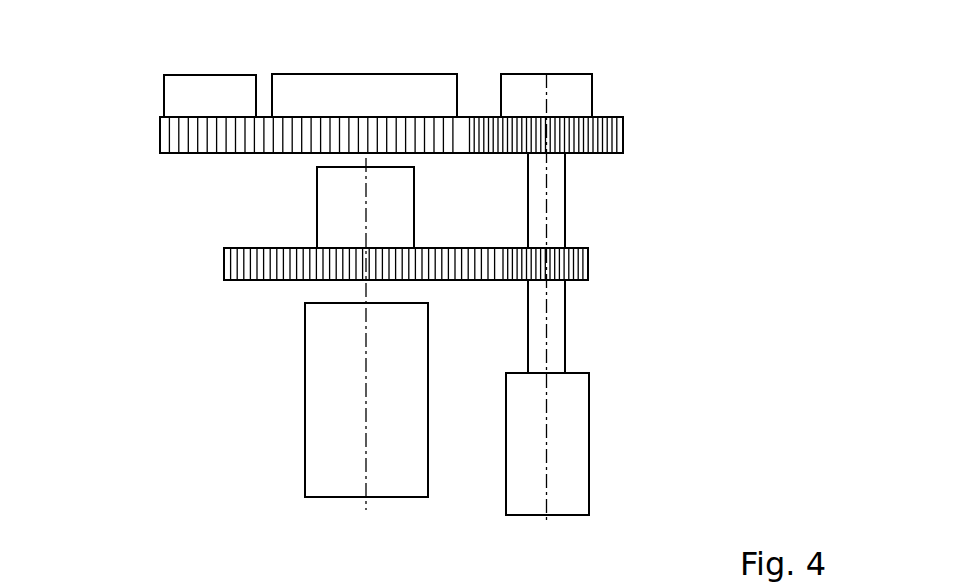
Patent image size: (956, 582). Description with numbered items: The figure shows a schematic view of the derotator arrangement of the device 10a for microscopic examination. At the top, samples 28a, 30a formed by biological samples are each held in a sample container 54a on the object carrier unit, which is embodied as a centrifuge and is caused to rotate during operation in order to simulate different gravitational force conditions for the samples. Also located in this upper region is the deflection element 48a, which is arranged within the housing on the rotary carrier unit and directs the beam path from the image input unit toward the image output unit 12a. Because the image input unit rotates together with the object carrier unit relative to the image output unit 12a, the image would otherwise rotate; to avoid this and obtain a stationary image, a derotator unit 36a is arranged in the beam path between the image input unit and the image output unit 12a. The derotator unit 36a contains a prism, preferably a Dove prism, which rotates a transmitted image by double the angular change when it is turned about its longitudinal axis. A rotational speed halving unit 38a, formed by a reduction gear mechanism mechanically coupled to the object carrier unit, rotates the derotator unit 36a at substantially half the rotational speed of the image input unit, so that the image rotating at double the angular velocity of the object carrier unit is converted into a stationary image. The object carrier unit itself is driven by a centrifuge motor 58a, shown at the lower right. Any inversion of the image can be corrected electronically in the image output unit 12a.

The device for microscopic examination 10a is at (133, 238).
The image output unit 12a is at (328, 458).
The sample 28a is at (567, 82).
The sample 30a is at (205, 88).
The derotator unit 36a is at (316, 208).
The rotational speed halving unit 38a is at (470, 287).
The deflection element 48a is at (373, 92).
The sample container 54a is at (173, 93).
The centrifuge motor 58a is at (575, 453).